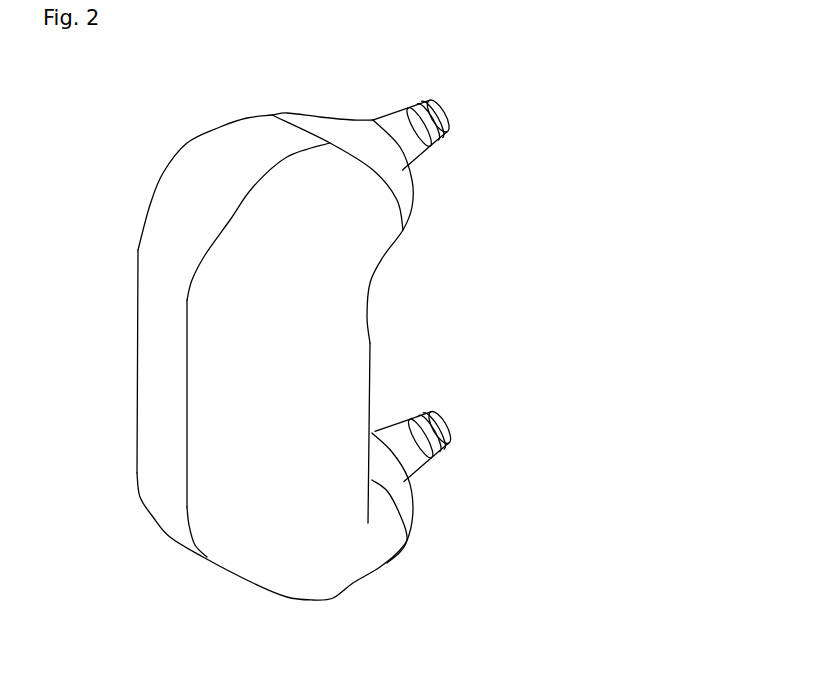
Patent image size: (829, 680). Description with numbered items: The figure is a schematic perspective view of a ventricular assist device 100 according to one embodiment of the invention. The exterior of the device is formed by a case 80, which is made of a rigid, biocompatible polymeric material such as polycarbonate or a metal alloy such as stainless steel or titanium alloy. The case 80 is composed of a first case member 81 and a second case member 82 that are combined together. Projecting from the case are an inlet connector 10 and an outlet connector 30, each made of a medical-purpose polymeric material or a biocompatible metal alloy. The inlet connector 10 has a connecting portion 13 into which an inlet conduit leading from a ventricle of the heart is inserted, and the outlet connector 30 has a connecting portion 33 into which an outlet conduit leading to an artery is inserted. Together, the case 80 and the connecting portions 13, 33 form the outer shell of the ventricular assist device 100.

The ventricular assist device 100 is at (190, 110).
The inlet connector 10 is at (408, 127).
The connecting portion 13 is at (440, 133).
The outlet connector 30 is at (444, 463).
The connecting portion 33 is at (440, 447).
The case 80 is at (223, 336).
The first case member 81 is at (155, 362).
The second case member 82 is at (213, 423).